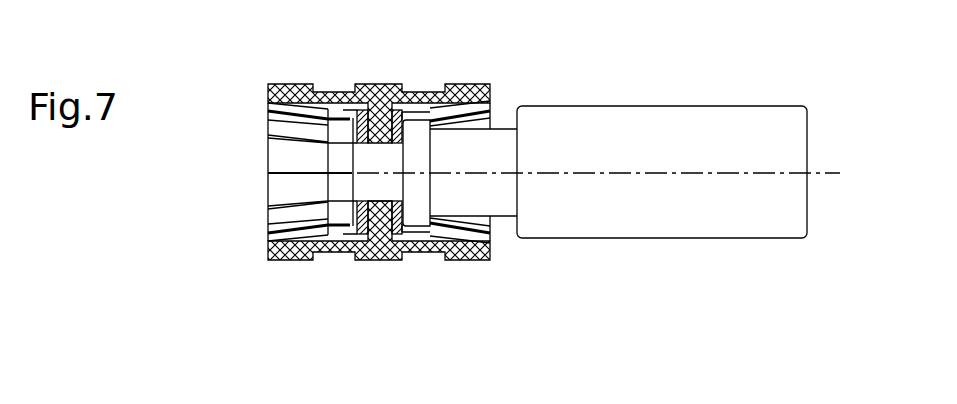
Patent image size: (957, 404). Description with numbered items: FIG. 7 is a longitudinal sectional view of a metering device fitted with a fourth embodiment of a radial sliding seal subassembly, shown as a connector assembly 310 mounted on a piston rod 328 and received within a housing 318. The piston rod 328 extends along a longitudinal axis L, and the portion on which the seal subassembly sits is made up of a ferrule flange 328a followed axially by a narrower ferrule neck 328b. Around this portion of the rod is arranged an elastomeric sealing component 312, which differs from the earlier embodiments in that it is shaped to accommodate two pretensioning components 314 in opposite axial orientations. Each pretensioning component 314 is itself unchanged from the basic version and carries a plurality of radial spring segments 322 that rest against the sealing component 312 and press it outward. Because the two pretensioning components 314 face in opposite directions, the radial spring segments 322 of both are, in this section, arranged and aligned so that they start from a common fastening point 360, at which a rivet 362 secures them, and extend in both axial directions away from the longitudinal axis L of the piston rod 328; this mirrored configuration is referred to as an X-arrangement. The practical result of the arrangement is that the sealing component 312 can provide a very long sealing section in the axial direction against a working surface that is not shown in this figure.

The connector assembly 310 is at (318, 286).
The sealing component 312 is at (383, 92).
The pretensioning component 314 is at (333, 110).
The housing 318 is at (270, 259).
The radial spring segments 322 is at (283, 128).
The piston rod 328 is at (680, 123).
The ferrule flange 328a is at (415, 152).
The ferrule neck 328b is at (507, 180).
The fastening point 360 is at (378, 222).
The rivet 362 is at (360, 187).
The longitudinal axis L is at (757, 173).